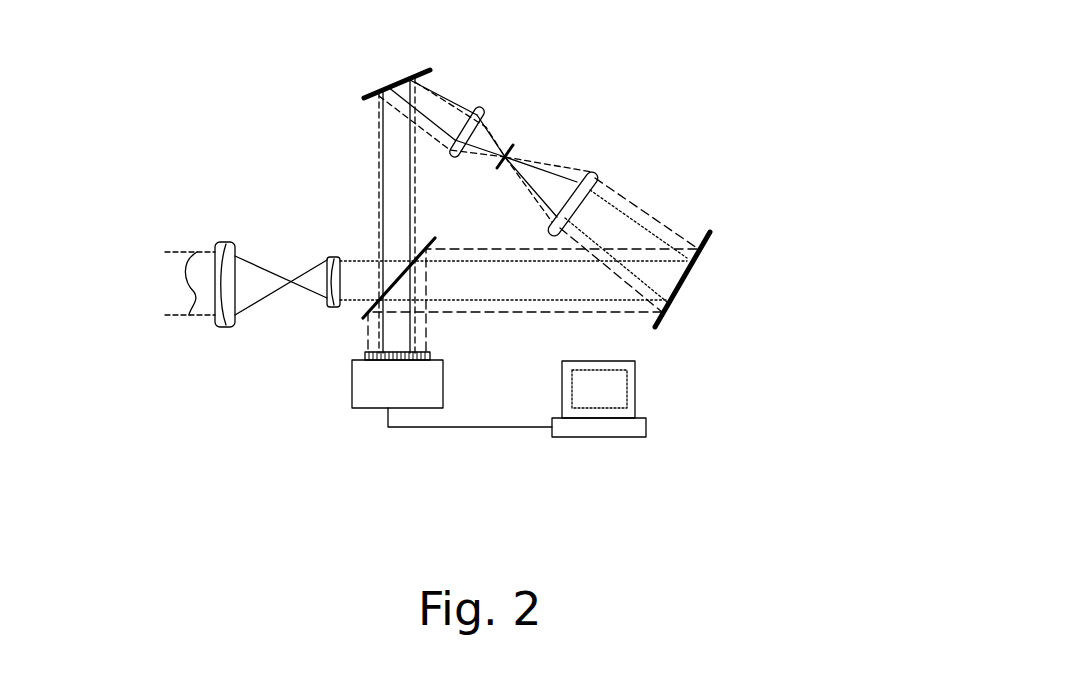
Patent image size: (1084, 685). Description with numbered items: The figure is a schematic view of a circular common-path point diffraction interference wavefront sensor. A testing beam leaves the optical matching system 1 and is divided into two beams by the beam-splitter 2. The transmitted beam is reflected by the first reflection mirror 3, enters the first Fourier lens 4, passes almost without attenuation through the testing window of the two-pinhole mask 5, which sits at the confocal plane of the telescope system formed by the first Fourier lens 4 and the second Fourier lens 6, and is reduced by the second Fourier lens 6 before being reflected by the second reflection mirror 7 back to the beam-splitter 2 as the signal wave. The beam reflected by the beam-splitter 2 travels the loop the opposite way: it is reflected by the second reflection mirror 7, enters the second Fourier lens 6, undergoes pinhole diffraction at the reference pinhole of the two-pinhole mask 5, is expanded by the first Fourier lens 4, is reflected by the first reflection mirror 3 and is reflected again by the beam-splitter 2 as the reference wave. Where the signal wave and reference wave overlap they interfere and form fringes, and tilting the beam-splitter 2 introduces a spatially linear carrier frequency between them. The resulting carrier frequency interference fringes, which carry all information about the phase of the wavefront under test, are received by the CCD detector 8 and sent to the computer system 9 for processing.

The optical matching system 1 is at (332, 228).
The beam-splitter 2 is at (475, 305).
The first reflection mirror 3 is at (669, 255).
The first Fourier lens 4 is at (607, 153).
The two-pinhole mask 5 is at (571, 99).
The second Fourier lens 6 is at (474, 90).
The second reflection mirror 7 is at (387, 183).
The CCD detector 8 is at (397, 394).
The computer system 9 is at (649, 399).